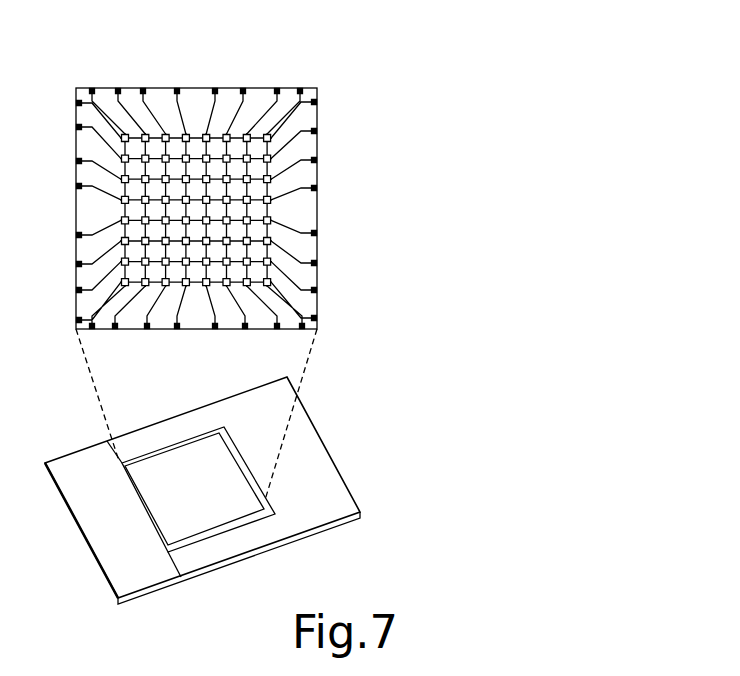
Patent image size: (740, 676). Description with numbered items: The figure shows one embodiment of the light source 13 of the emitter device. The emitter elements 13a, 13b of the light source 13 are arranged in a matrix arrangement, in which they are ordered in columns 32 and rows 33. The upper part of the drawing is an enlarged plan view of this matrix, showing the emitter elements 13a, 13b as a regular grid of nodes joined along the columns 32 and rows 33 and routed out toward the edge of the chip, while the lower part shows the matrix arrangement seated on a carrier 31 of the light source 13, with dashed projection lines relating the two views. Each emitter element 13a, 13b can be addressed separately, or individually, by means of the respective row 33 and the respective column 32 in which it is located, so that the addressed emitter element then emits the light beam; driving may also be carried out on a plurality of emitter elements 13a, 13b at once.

The light source 13 is at (243, 486).
The emitter element 13a is at (127, 134).
The emitter element 13b is at (148, 134).
The carrier 31 is at (335, 487).
The column 32 is at (267, 132).
The row 33 is at (276, 205).